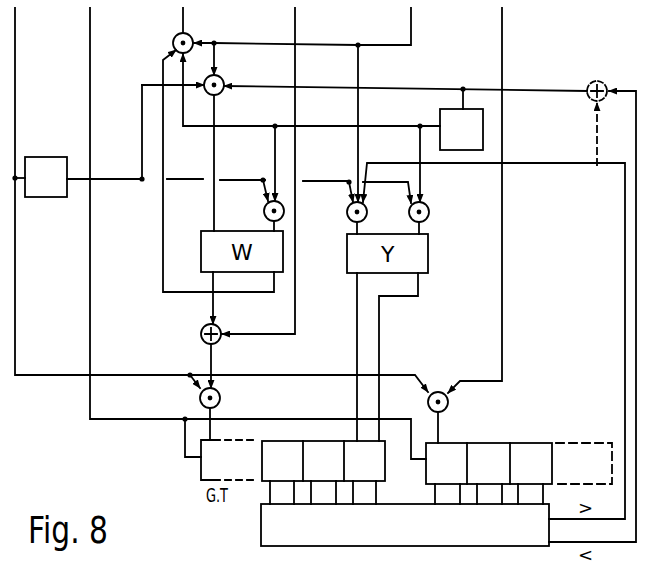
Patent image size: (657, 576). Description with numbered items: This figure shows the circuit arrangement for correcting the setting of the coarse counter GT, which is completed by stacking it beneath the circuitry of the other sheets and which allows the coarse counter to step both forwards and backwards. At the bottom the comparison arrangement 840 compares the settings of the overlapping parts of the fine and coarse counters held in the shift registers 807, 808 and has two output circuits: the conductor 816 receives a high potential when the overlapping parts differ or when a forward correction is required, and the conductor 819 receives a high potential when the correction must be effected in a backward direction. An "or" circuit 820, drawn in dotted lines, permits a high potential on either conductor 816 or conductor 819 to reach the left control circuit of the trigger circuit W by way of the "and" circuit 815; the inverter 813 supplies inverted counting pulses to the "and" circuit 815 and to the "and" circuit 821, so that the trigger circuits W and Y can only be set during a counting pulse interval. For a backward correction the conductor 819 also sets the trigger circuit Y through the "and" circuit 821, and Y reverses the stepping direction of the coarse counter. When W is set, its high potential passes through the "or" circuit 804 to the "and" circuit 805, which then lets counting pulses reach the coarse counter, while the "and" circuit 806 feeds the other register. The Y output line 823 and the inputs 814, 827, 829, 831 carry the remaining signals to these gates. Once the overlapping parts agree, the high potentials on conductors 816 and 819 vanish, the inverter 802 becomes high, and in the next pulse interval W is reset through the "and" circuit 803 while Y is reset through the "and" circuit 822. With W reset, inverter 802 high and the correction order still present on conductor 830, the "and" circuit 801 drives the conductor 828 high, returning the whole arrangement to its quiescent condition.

The "and" circuit 801 is at (293, 160).
The inverter 802 is at (461, 118).
The "and" circuit 803 is at (258, 178).
The "or" circuit 804 is at (194, 330).
The "and" circuit 805 is at (225, 413).
The multiplier 806 is at (453, 416).
The shift register 807 is at (323, 472).
The shift register 808 is at (519, 464).
The inverter 813 is at (213, 180).
The input line 814 is at (220, 200).
The "and" circuit 815 is at (363, 138).
The conductor 816 is at (616, 134).
The conductor 819 is at (494, 341).
The "or" circuit 820 is at (592, 299).
The "and" circuit 821 is at (341, 243).
The "and" circuit 822 is at (434, 180).
The output line 823 is at (358, 357).
The input line 827 is at (258, 233).
The conductor 828 is at (199, 22).
The input line 829 is at (275, 171).
The conductor 830 is at (319, 28).
The input line 831 is at (492, 200).
The comparison arrangement 840 is at (405, 525).